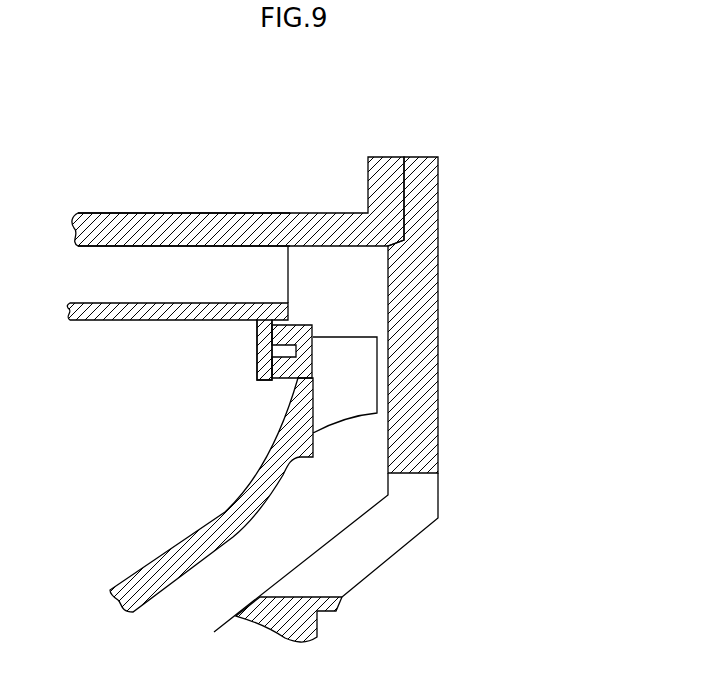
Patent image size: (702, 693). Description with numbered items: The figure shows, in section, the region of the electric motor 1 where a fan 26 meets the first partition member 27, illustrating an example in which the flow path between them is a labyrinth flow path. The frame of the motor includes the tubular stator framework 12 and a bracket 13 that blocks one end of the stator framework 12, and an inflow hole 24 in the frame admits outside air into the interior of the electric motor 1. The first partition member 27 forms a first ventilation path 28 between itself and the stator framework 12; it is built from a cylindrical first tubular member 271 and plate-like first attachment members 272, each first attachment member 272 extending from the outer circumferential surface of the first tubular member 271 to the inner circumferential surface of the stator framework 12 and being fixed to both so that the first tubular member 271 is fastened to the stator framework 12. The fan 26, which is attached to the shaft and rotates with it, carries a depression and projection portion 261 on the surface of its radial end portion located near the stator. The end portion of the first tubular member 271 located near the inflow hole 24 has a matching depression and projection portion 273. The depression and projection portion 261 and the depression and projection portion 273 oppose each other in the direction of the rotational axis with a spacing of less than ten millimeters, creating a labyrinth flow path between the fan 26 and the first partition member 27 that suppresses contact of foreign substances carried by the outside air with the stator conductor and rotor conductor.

The electric motor 1 is at (441, 126).
The stator framework 12 is at (238, 232).
The bracket 13 is at (420, 412).
The inflow hole 24 is at (398, 530).
The fan 26 is at (240, 452).
The first partition member 27 is at (174, 362).
The first ventilation path 28 is at (258, 271).
The depression and projection portion 261 is at (310, 345).
The first tubular member 271 is at (182, 310).
The first attachment member 272 is at (173, 257).
The depression and projection portion 273 is at (257, 370).